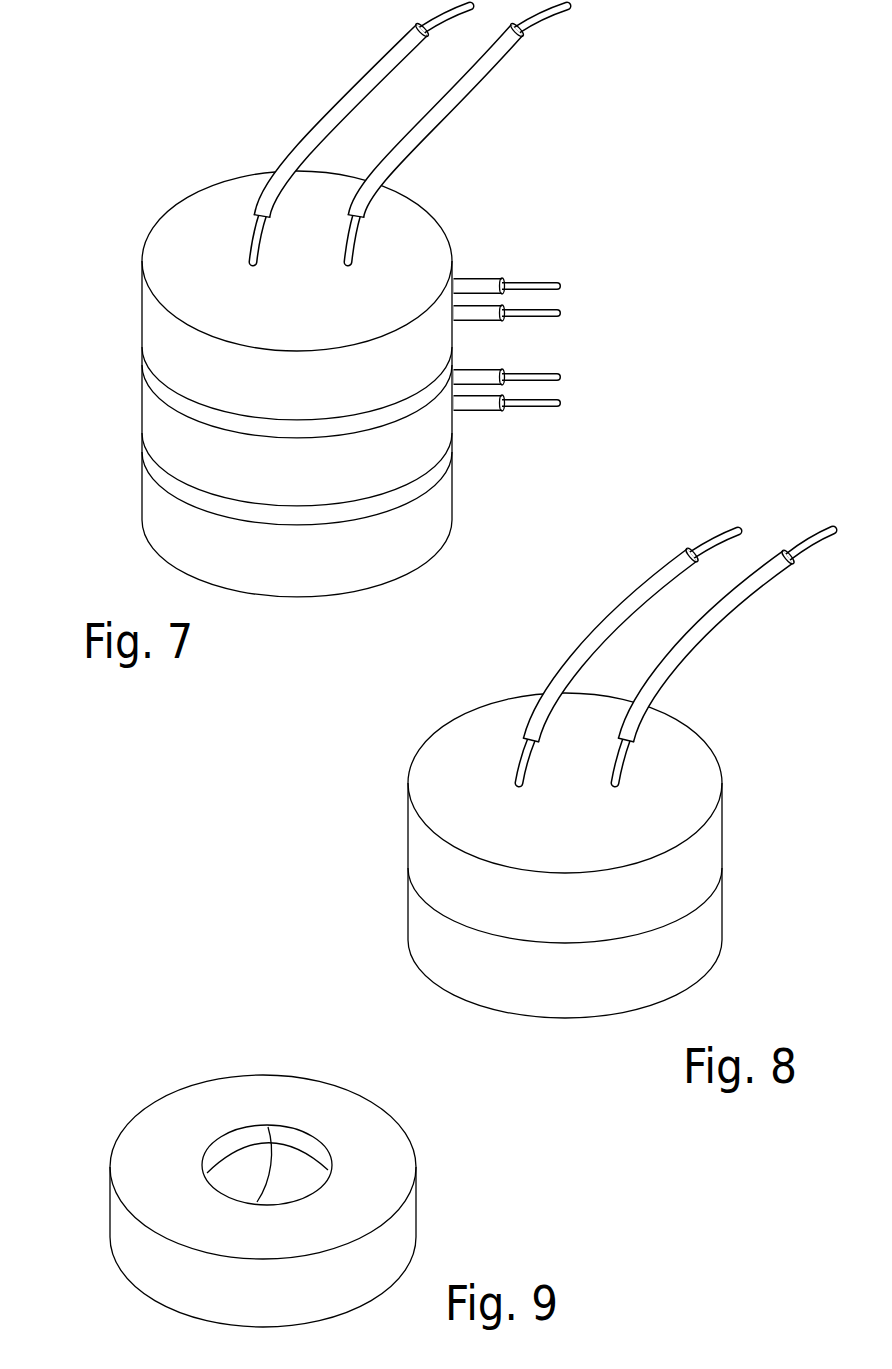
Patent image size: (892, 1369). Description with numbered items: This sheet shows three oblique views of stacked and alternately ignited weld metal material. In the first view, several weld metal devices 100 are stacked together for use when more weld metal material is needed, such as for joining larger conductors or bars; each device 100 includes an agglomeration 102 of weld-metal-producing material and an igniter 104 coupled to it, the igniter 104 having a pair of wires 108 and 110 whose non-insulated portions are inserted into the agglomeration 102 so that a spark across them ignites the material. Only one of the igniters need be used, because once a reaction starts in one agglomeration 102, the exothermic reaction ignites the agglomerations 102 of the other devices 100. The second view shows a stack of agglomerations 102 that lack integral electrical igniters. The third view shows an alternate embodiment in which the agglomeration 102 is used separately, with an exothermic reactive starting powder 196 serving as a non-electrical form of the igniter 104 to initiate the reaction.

In FIG. 7, the weld metal device 100 is at (332, 303).
In FIG. 8, the weld metal device 100 is at (568, 774).
In FIG. 9, the weld metal device 100 is at (253, 1155).
In FIG. 7, the agglomeration 102 is at (173, 275).
In FIG. 8, the agglomeration 102 is at (430, 858).
In FIG. 9, the agglomeration 102 is at (125, 1237).
In FIG. 9, the igniter 104 is at (267, 1092).
In FIG. 7, the wire 108 is at (370, 67).
In FIG. 8, the wire 108 is at (622, 603).
In FIG. 7, the wire 110 is at (475, 80).
In FIG. 8, the wire 110 is at (753, 595).
In FIG. 9, the exothermic reactive starting powder 196 is at (297, 1138).